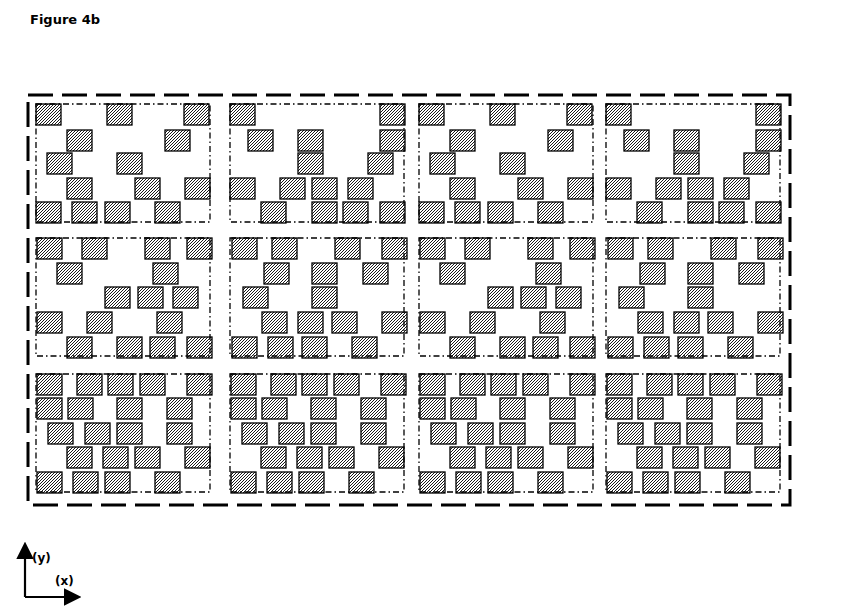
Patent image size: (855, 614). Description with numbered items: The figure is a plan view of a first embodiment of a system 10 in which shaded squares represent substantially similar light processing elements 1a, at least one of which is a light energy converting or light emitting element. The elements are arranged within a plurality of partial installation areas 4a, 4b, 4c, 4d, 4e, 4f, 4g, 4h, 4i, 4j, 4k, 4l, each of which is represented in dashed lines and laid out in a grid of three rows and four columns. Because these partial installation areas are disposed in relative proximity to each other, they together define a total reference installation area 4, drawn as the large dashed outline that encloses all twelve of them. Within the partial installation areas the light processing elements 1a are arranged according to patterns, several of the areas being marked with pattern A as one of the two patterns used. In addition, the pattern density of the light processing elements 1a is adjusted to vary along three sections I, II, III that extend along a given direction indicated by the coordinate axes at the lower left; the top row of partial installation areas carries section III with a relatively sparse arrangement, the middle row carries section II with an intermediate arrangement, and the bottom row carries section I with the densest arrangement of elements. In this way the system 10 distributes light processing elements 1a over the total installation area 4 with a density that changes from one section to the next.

The system 10 is at (405, 288).
The total reference installation area 4 is at (409, 290).
The light processing element 1a is at (60, 114).
The partial installation area 4a is at (124, 170).
The partial installation area 4b is at (318, 170).
The partial installation area 4c is at (506, 170).
The partial installation area 4d is at (693, 170).
The partial installation area 4e is at (124, 304).
The partial installation area 4f is at (318, 304).
The partial installation area 4g is at (507, 304).
The partial installation area 4h is at (694, 304).
The partial installation area 4i is at (124, 440).
The partial installation area 4j is at (318, 440).
The partial installation area 4k is at (507, 440).
The partial installation area 4l is at (694, 440).
The pattern A is at (123, 163).
The section I is at (90, 408).
The section II is at (85, 273).
The section III is at (93, 140).